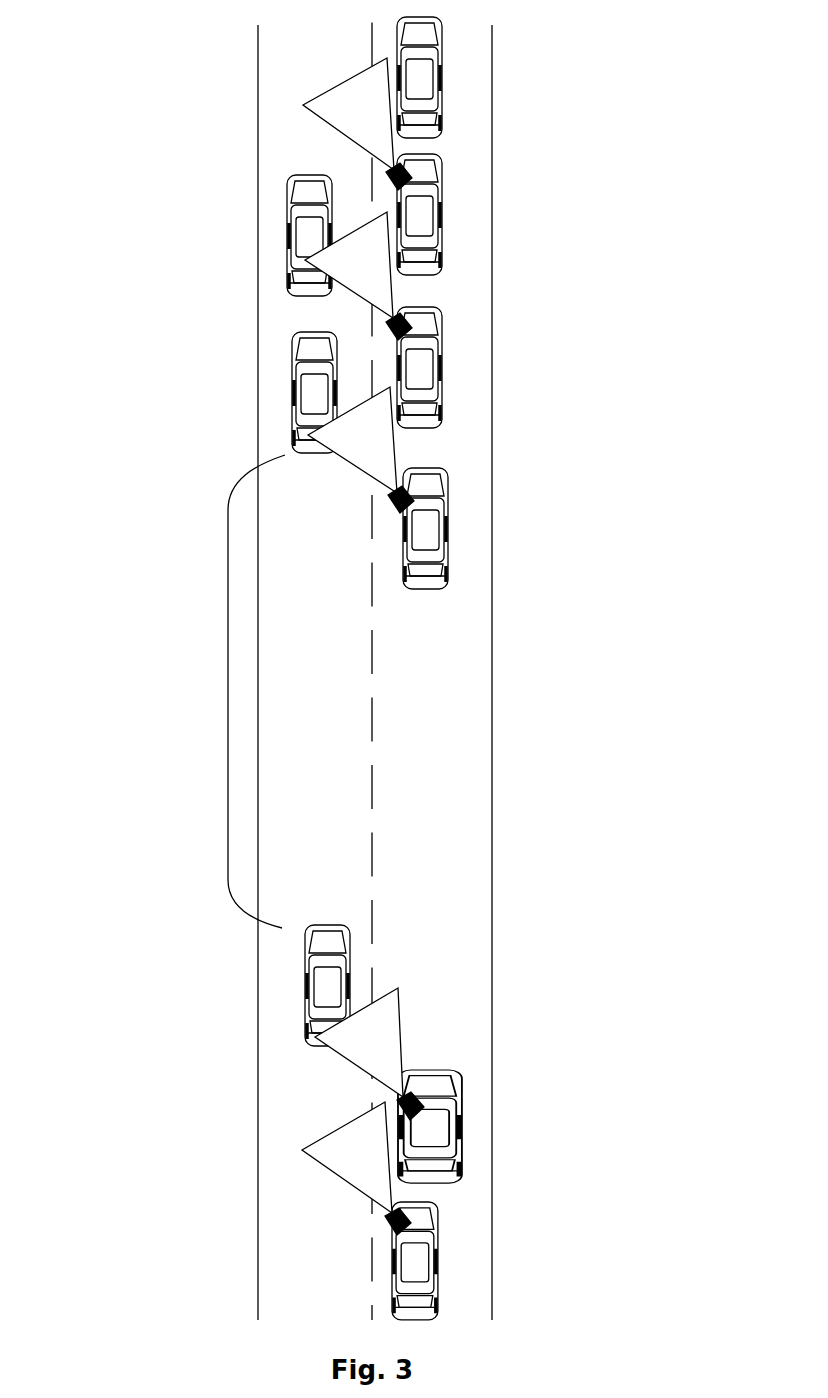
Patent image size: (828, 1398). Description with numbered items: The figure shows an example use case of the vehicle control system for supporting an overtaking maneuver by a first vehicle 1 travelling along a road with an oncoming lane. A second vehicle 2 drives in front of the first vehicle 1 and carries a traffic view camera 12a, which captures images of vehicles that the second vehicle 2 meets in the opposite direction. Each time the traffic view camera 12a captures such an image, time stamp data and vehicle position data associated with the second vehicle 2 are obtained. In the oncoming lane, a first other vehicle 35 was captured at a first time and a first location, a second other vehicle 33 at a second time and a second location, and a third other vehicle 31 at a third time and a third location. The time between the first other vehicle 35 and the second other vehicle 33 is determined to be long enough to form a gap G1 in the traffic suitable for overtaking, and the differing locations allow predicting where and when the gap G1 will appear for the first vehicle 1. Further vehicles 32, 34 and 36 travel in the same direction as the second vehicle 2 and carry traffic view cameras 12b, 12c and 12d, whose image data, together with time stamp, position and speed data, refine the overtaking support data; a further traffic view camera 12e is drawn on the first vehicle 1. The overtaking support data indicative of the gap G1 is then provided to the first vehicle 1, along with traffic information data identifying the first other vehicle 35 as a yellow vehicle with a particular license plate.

The first vehicle 1 is at (460, 1237).
The second vehicle 2 is at (467, 190).
The third other vehicle 31 is at (270, 221).
The vehicle 32 is at (466, 342).
The second other vehicle 33 is at (270, 356).
The vehicle 34 is at (470, 502).
The first other vehicle 35 is at (278, 968).
The vehicle 36 is at (480, 1102).
The traffic view camera 12a is at (384, 152).
The traffic view camera 12b is at (385, 304).
The traffic view camera 12c is at (385, 474).
The traffic view camera 12d is at (393, 1079).
The sensor detection range 12e is at (381, 1195).
The gap G1 is at (228, 692).